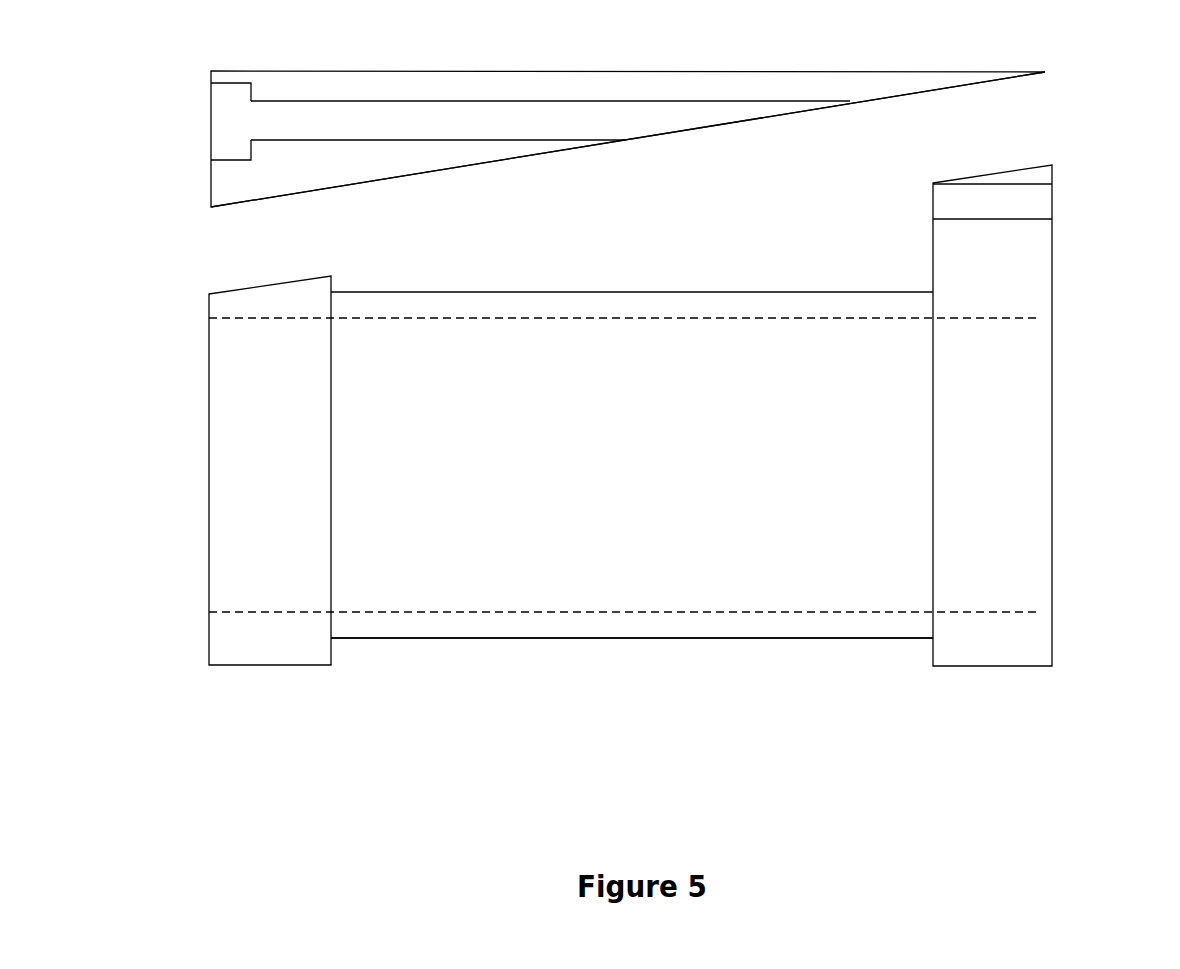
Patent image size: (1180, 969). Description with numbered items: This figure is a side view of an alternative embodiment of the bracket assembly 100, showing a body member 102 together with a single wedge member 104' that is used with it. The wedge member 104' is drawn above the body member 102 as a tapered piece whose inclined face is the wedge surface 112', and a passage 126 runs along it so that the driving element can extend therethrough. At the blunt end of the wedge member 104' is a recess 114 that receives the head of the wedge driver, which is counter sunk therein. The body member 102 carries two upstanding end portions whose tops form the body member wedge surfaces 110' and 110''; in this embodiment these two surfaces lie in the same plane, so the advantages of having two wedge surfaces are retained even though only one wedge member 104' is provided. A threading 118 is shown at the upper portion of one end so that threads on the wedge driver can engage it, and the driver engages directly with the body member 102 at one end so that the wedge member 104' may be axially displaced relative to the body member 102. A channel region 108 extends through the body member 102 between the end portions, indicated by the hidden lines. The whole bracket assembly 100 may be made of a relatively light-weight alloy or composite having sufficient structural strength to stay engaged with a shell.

The bracket assembly 100 is at (808, 677).
The body member 102 is at (422, 625).
The wedge member 104' is at (628, 107).
The channel 108 is at (615, 590).
The body member wedge surface 110' is at (233, 446).
The body member wedge surface 110'' is at (1033, 374).
The wedge surface 112' is at (628, 151).
The recess 114 is at (233, 123).
The threading 118 is at (1032, 187).
The passage 126 is at (348, 115).